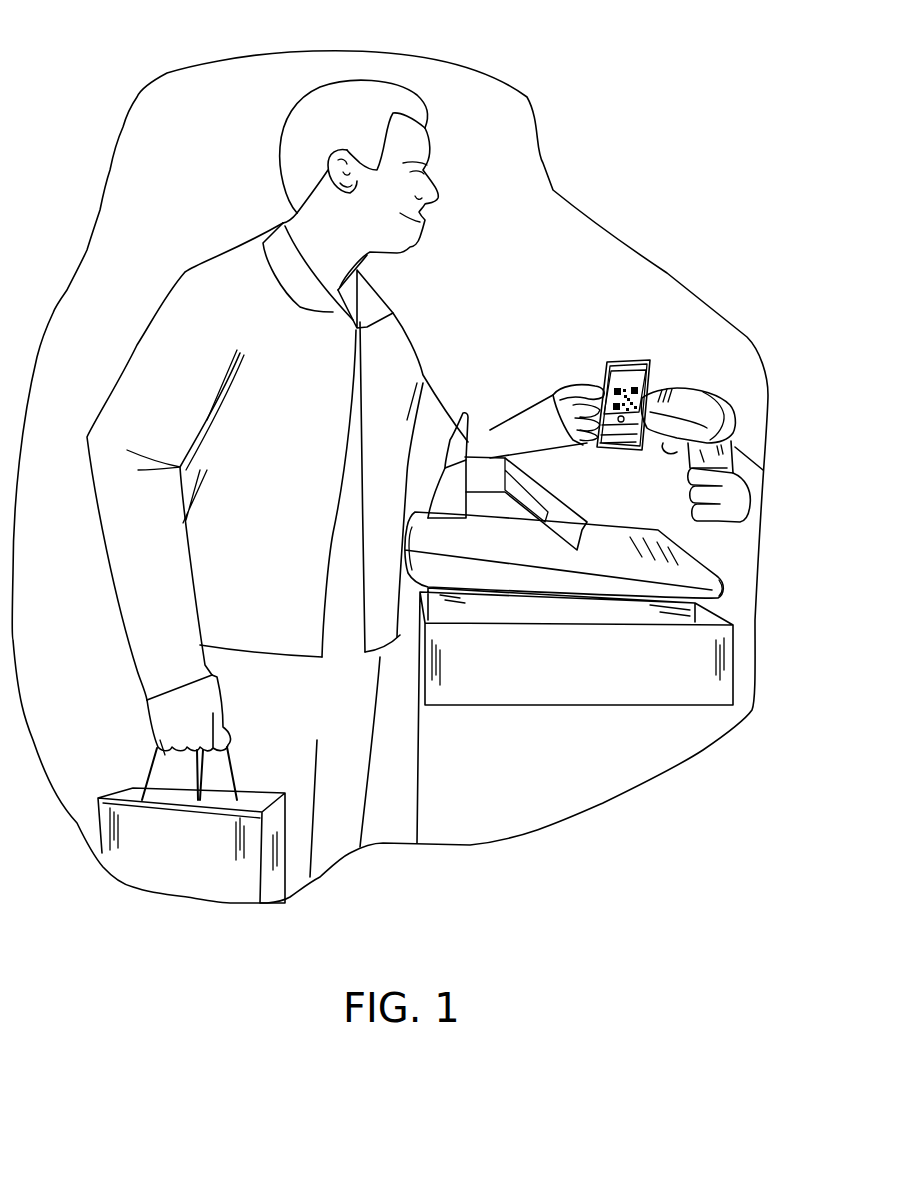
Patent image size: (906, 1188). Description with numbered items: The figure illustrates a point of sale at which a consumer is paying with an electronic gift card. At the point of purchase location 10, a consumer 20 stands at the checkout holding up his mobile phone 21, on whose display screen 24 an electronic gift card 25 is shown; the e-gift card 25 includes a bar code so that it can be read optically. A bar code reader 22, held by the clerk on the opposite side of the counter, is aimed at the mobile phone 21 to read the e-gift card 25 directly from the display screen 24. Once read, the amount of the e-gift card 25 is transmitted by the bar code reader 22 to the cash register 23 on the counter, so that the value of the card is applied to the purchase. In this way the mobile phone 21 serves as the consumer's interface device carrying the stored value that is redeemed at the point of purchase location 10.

The point of purchase location 10 is at (405, 80).
The consumer 20 is at (608, 495).
The mobile phone 21 is at (678, 336).
The bar code reader 22 is at (733, 415).
The cash register 23 is at (723, 578).
The display screen 24 is at (617, 360).
The electronic gift card 25 is at (607, 360).